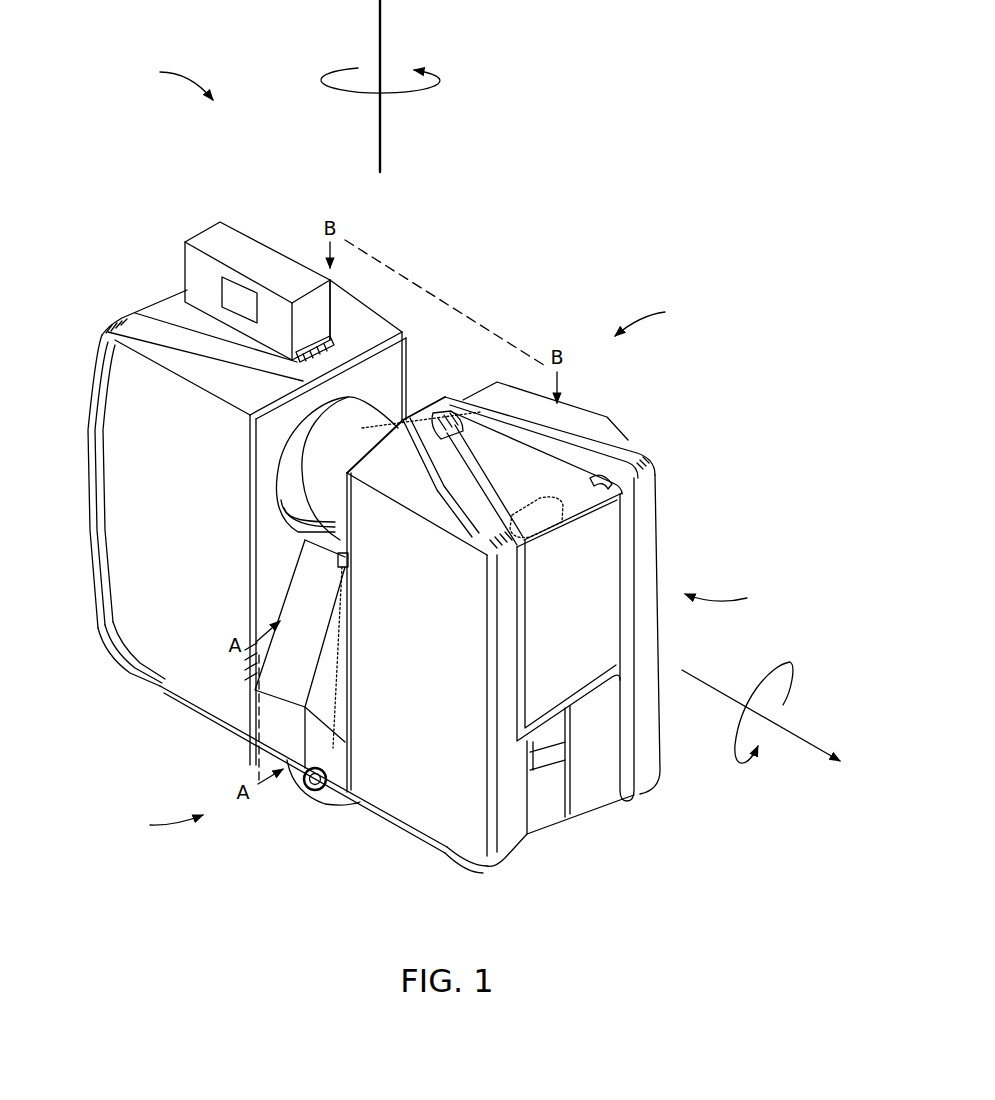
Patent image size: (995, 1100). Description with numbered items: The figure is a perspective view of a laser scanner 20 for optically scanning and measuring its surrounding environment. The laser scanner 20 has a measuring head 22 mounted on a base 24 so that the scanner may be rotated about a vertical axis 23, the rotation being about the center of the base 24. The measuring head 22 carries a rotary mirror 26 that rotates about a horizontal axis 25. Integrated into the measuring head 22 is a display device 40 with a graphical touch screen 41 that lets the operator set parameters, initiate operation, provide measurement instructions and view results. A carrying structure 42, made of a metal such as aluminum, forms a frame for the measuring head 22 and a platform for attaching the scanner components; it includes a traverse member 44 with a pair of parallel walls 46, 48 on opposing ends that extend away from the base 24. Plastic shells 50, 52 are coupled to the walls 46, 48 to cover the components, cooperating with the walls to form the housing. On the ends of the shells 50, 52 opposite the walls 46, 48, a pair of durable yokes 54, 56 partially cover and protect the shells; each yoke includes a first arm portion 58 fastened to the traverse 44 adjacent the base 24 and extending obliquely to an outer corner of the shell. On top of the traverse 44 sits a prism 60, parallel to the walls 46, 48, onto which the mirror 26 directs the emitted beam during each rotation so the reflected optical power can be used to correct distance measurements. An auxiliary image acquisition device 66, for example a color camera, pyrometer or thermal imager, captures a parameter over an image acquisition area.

The laser scanner 20 is at (168, 78).
The measuring head 22 is at (527, 364).
The vertical axis 23 is at (383, 45).
The base 24 is at (312, 792).
The horizontal axis 25 is at (812, 738).
The rotary mirror 26 is at (548, 432).
The display device 40 is at (708, 634).
The graphical touch screen 41 is at (597, 563).
The carrying structure 42 is at (155, 825).
The traverse member 44 is at (333, 750).
The wall 46 is at (483, 390).
The wall 48 is at (385, 367).
The shell 50 is at (133, 550).
The shell 52 is at (517, 833).
The yoke 54 is at (612, 450).
The yoke 56 is at (150, 325).
The first arm portion 58 is at (117, 670).
The prism 60 is at (361, 803).
The auxiliary image acquisition device 66 is at (200, 235).